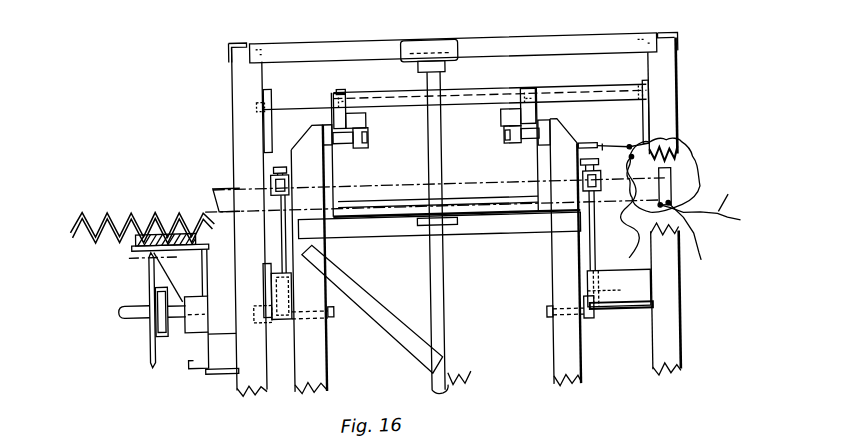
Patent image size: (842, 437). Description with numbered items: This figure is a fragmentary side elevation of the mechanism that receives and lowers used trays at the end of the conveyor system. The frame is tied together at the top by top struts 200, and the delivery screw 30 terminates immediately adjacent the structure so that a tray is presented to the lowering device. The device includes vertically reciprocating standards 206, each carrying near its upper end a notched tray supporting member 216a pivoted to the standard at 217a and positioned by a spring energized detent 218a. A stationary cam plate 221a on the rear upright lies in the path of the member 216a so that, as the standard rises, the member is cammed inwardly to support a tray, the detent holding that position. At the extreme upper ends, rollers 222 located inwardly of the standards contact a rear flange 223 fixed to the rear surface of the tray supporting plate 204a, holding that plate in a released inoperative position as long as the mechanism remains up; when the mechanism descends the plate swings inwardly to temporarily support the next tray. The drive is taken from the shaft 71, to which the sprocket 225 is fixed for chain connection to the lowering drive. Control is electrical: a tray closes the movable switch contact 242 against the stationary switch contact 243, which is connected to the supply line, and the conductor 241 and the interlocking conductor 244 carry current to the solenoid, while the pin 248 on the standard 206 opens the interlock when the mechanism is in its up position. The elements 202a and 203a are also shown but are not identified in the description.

The top strut 200 is at (303, 52).
The rear flange 223 is at (358, 120).
The tray supporting plate 204a is at (464, 149).
The rail 203a is at (585, 104).
The bracket strap 202a is at (269, 93).
The roller 222 is at (384, 161).
The delivery screw 30 is at (113, 210).
The detent 218a is at (268, 183).
The pin 248 is at (583, 152).
The movable switch contact 242 is at (672, 186).
The stationary switch contact 243 is at (673, 201).
The conductor 244 is at (633, 268).
The conductor 241 is at (698, 262).
The shaft 71 is at (118, 304).
The sprocket 225 is at (149, 339).
The tray supporting member 216a is at (281, 229).
The stationary cam plate 221a is at (279, 291).
The standard 206 is at (311, 345).
The pivot 217a is at (229, 373).